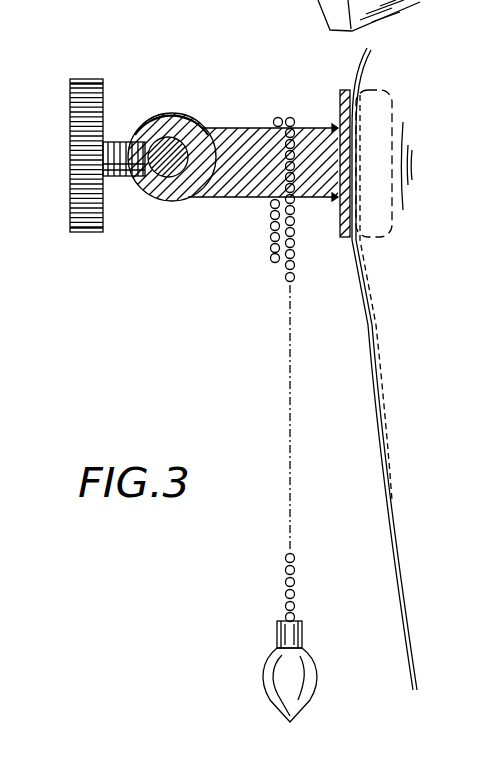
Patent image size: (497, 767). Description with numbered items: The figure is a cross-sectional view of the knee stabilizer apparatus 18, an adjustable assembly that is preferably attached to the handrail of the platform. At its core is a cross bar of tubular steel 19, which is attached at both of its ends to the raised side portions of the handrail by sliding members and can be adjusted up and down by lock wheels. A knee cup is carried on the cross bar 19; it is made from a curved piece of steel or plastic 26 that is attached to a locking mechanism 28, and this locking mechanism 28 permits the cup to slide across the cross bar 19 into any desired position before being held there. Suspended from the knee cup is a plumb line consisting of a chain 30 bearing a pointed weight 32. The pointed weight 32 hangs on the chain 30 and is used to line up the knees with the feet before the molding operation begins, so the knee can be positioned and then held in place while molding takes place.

The knee stabilizer apparatus 18 is at (112, 70).
The cross bar of tubular steel 19 is at (168, 116).
The curved piece of steel or plastic 26 is at (347, 240).
The locking mechanism 28 is at (97, 234).
The chain 30 is at (285, 282).
The pointed weight 32 is at (302, 663).